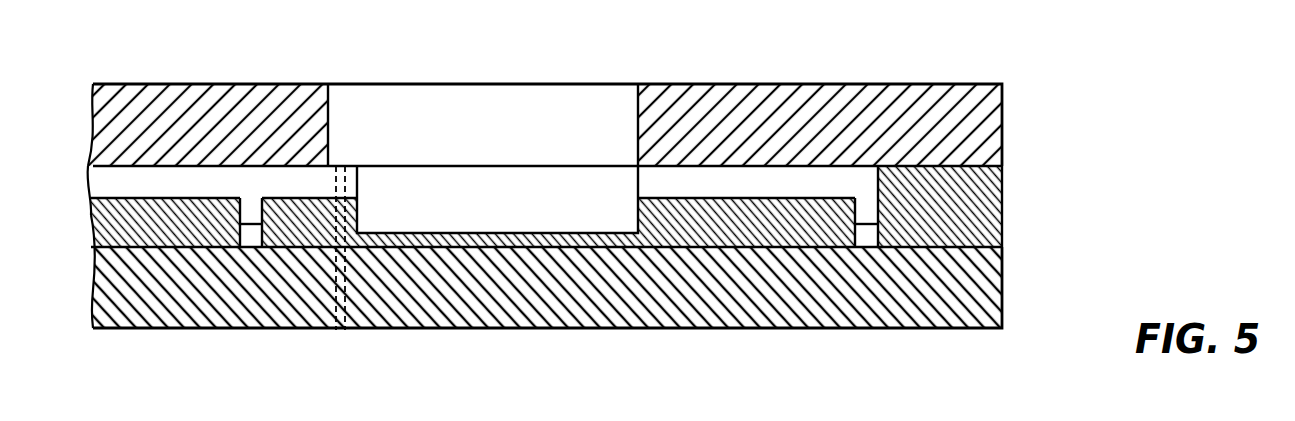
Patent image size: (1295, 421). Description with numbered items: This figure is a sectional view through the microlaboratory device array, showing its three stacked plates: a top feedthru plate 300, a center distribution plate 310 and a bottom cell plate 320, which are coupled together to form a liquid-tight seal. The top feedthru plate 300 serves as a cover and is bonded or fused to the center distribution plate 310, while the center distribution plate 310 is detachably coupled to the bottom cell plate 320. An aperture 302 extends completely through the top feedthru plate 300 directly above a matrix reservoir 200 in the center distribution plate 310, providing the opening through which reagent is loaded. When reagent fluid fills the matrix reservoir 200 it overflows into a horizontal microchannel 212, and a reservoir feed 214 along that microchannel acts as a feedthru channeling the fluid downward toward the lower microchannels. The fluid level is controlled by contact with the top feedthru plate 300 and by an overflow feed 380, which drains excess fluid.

The matrix reservoir 200 is at (397, 183).
The horizontal microchannel 212 is at (268, 178).
The reservoir feed 214 is at (240, 209).
The top feedthru plate 300 is at (992, 135).
The aperture 302 is at (573, 100).
The center distribution plate 310 is at (992, 211).
The bottom cell plate 320 is at (990, 302).
The overflow feed 380 is at (340, 328).